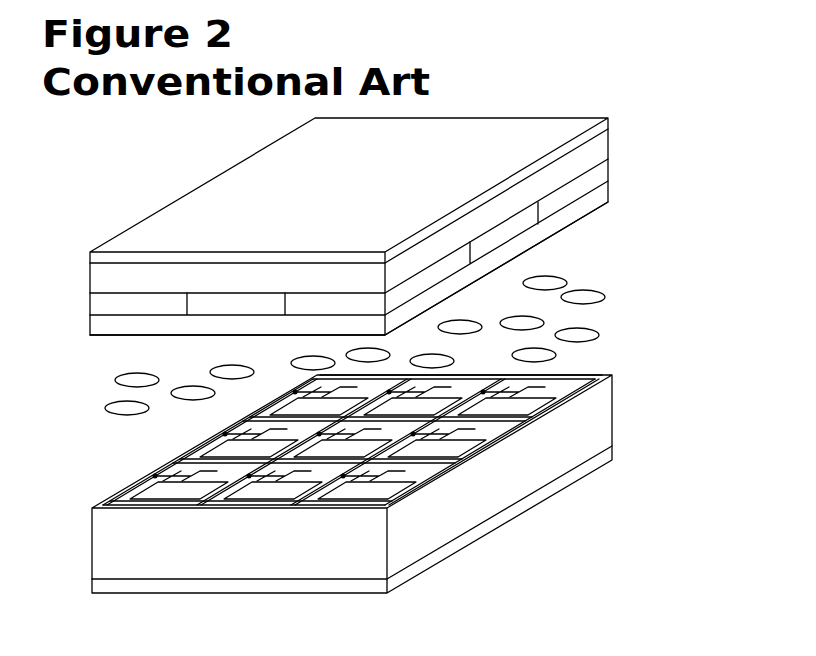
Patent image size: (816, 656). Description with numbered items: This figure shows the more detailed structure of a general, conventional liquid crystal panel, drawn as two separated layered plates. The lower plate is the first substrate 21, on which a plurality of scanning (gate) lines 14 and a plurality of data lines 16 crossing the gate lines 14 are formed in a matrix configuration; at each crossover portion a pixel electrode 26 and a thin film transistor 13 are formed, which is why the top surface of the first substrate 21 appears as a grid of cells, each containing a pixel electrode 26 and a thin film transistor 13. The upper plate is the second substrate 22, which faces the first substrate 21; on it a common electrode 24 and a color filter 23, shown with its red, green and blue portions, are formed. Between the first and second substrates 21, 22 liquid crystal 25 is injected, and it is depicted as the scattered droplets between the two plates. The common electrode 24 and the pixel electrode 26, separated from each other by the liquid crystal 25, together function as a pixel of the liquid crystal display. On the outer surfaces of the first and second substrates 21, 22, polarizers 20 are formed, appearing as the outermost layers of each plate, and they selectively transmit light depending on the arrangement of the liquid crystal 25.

The polarizer 20 is at (603, 130).
The second substrate 22 is at (598, 153).
The color filter 23 is at (600, 177).
The common electrode 24 is at (597, 199).
The liquid crystal 25 is at (599, 334).
The first substrate 21 is at (560, 457).
The scanning (gate) line 14 is at (450, 468).
The data line 16 is at (300, 503).
The pixel electrode 26 is at (395, 485).
The thin film transistor 13 is at (357, 480).